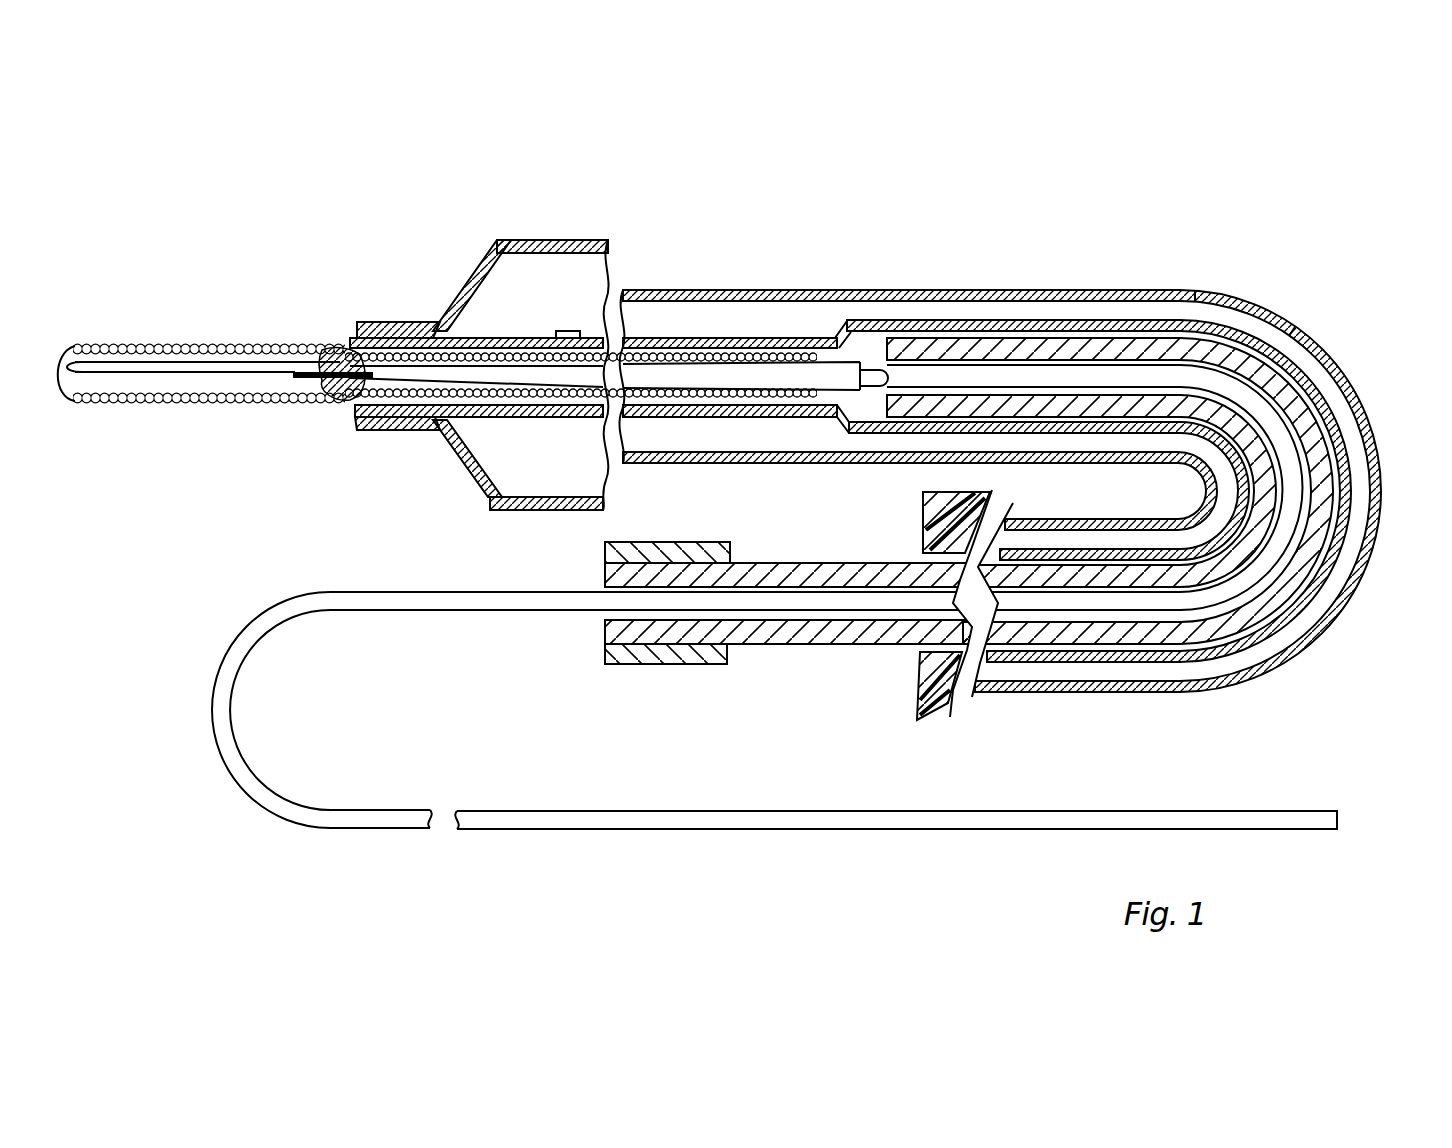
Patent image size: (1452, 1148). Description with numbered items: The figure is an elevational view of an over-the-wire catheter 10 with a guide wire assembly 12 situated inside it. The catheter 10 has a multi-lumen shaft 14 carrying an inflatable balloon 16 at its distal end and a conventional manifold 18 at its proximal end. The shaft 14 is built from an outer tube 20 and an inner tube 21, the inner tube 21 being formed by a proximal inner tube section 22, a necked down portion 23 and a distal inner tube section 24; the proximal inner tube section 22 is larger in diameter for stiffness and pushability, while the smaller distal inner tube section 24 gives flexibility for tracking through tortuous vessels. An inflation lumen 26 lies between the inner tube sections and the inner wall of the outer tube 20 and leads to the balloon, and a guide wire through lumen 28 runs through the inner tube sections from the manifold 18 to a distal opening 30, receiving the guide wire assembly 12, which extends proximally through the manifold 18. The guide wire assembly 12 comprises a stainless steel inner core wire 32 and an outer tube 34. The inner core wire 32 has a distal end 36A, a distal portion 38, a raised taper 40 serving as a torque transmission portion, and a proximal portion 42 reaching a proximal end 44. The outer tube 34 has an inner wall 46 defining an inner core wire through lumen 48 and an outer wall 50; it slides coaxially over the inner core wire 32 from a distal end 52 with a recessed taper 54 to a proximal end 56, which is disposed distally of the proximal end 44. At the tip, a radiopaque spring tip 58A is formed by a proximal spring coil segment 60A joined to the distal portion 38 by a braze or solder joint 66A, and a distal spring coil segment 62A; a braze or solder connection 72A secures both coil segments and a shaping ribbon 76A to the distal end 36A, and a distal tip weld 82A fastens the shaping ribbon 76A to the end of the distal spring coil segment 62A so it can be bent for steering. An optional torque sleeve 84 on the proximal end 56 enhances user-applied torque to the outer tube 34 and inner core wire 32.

The over-the-wire catheter 10 is at (1102, 250).
The guide wire assembly 12 is at (850, 662).
The multi-lumen shaft 14 is at (863, 288).
The inflatable balloon 16 is at (530, 240).
The manifold 18 is at (921, 536).
The outer tube 20 is at (1134, 292).
The inner tube 21 is at (1324, 402).
The proximal inner tube section 22 is at (1200, 303).
The necked down portion 23 is at (840, 428).
The distal inner tube section 24 is at (483, 337).
The inflation lumen 26 is at (1060, 312).
The guide wire through lumen 28 is at (1090, 335).
The distal opening 30 is at (351, 333).
The inner core wire 32 is at (1258, 383).
The outer tube 34 is at (766, 647).
The distal end 36A is at (305, 399).
The distal portion 38 is at (537, 365).
The raised taper 40 is at (910, 318).
The proximal portion 42 is at (348, 593).
The proximal end 44 is at (1325, 812).
The inner wall 46 is at (1065, 614).
The inner core wire through lumen 48 is at (1175, 628).
The outer wall 50 is at (1223, 672).
The distal end 52 is at (912, 428).
The recessed taper 54 is at (877, 392).
The proximal end 56 is at (604, 575).
The radiopaque spring tip 58A is at (170, 335).
The proximal spring coil segment 60A is at (378, 422).
The distal spring coil segment 62A is at (218, 405).
The braze or solder joint 66A is at (770, 360).
The braze or solder connection 72A is at (348, 343).
The shaping ribbon 76A is at (152, 374).
The distal tip weld 82A is at (66, 380).
The torque sleeve 84 is at (620, 654).